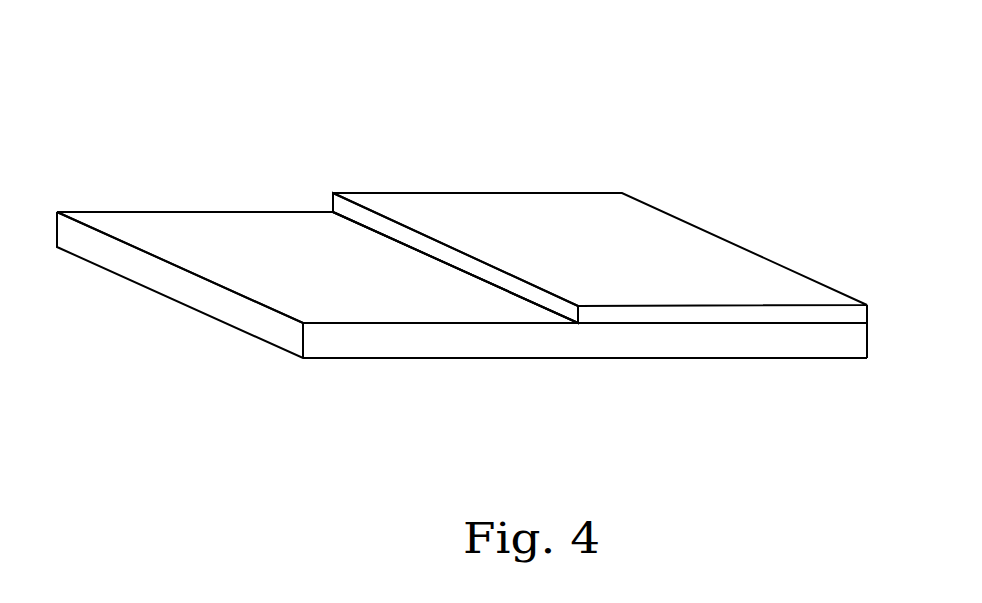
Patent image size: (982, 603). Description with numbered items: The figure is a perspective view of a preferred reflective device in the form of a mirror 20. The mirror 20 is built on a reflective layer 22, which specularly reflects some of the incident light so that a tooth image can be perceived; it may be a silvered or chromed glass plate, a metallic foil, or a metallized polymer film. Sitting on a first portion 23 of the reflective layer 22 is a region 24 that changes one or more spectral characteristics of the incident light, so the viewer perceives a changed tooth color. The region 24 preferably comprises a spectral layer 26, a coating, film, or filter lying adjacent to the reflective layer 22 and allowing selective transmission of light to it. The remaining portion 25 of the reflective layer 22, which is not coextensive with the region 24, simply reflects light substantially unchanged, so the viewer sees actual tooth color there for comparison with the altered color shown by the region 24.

The mirror 20 is at (462, 230).
The reflective layer 22 is at (415, 345).
The first portion of the reflective layer 23 is at (727, 368).
The region 24 is at (722, 208).
The portion of the reflective layer 25 is at (182, 187).
The spectral layer 26 is at (465, 263).